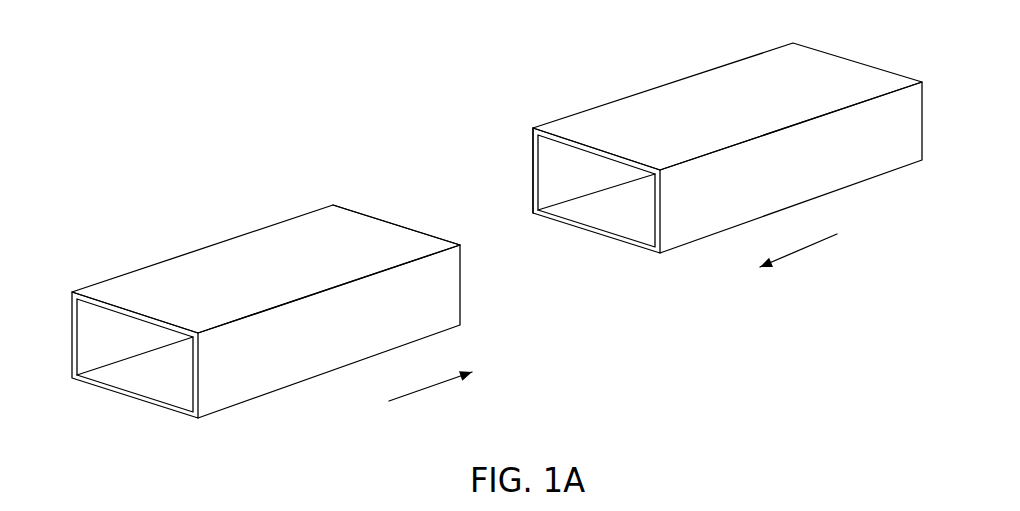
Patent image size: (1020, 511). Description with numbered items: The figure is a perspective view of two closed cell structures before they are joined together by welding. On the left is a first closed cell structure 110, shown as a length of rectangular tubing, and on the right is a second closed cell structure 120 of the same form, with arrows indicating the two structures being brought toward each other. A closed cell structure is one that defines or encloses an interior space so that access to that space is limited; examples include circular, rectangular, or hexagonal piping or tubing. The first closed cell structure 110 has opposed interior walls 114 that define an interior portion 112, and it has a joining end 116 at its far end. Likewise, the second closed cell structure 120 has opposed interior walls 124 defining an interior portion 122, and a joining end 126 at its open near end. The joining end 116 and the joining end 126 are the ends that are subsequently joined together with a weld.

The first closed cell structure 110 is at (232, 305).
The interior portion 112 is at (140, 368).
The opposed interior walls 114 is at (138, 300).
The joining end 116 is at (367, 217).
The second closed cell structure 120 is at (679, 168).
The interior portion 122 is at (608, 202).
The opposed interior walls 124 is at (585, 133).
The joining end 126 is at (533, 140).